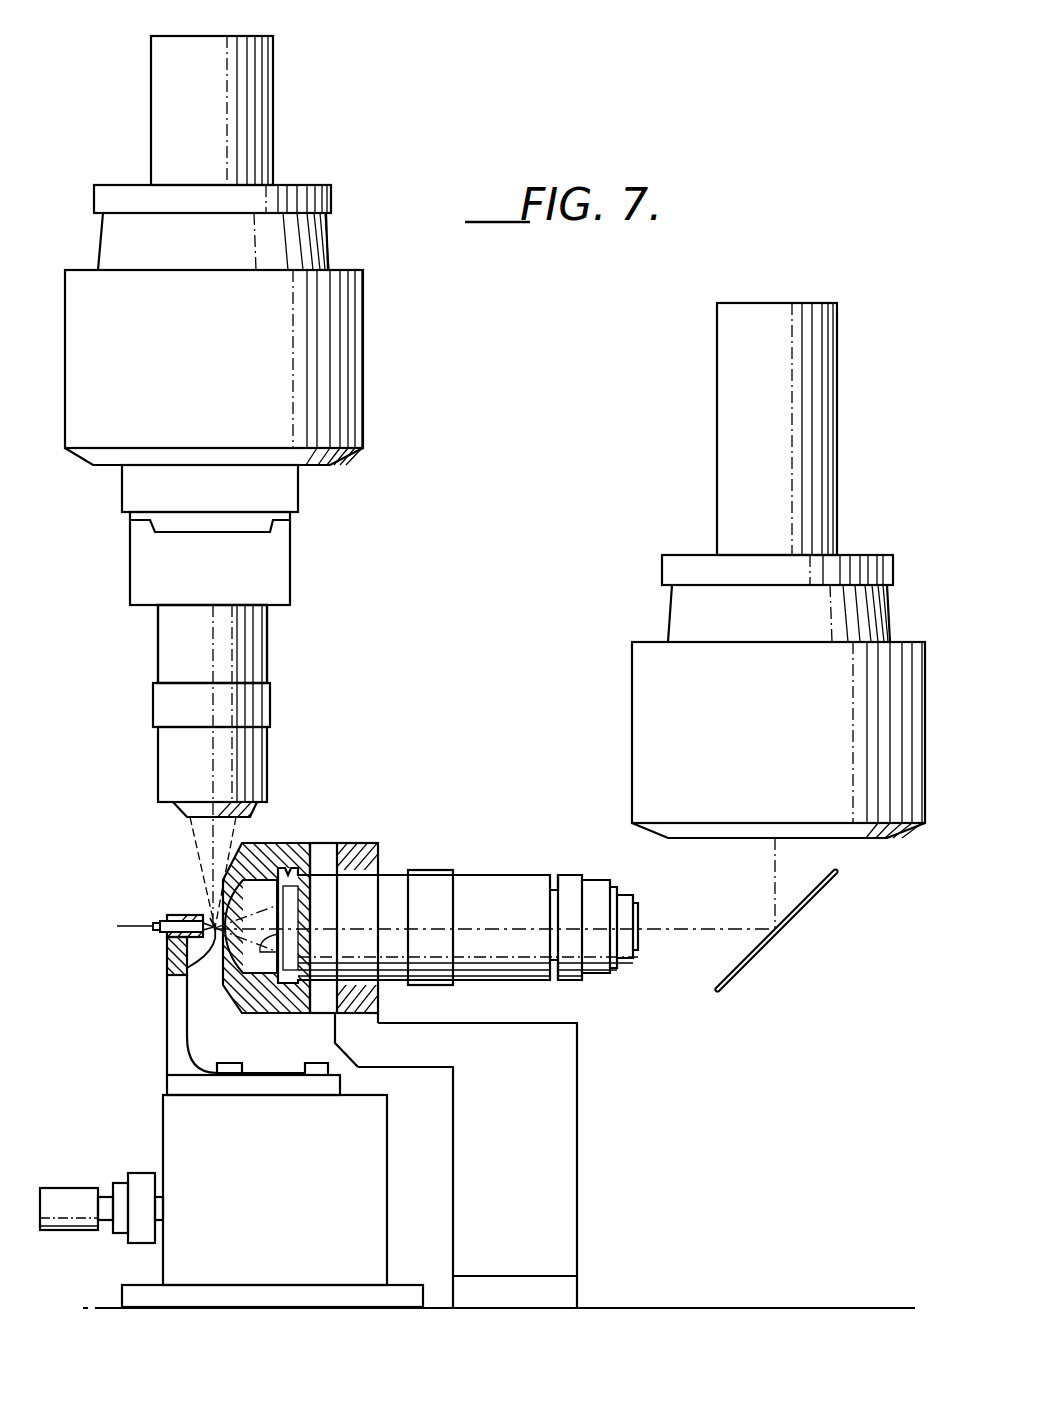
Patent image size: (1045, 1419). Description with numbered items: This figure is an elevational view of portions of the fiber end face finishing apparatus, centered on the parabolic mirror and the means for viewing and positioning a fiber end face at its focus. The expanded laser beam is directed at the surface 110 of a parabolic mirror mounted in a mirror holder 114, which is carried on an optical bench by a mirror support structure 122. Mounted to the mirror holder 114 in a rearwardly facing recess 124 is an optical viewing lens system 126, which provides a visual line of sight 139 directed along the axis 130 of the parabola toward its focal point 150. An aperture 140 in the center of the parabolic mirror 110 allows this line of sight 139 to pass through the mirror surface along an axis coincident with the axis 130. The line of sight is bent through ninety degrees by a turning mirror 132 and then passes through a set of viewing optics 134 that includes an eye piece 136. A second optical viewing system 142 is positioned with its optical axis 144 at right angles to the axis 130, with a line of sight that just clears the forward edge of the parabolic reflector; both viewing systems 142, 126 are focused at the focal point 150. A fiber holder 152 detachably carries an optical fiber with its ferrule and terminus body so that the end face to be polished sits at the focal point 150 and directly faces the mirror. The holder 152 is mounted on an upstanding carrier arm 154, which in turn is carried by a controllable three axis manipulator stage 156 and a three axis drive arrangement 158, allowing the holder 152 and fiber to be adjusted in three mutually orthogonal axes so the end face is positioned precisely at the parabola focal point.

The parabolic mirror surface 110 is at (207, 896).
The mirror holder 114 is at (278, 850).
The mirror support structure 122 is at (537, 1180).
The rearwardly facing recess 124 is at (313, 847).
The optical viewing lens system 126 is at (449, 900).
The axis of the parabolic mirror 130 is at (120, 931).
The turning mirror 132 is at (802, 910).
The viewing optics 134 is at (636, 718).
The eye piece 136 is at (717, 441).
The visual line of sight 139 is at (292, 943).
The aperture 140 is at (277, 917).
The second optical viewing system 142 is at (286, 708).
The optical axis 144 is at (213, 659).
The focal point 150 is at (167, 963).
The fiber holder 152 is at (164, 911).
The carrier arm 154 is at (167, 1022).
The three axis manipulator stage 156 is at (288, 1180).
The three axis drive arrangement 158 is at (113, 1159).